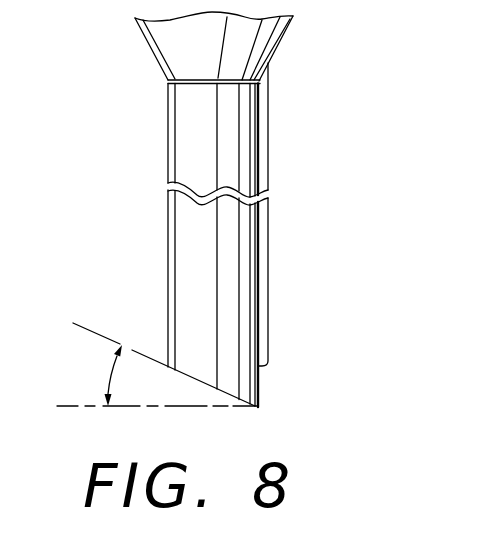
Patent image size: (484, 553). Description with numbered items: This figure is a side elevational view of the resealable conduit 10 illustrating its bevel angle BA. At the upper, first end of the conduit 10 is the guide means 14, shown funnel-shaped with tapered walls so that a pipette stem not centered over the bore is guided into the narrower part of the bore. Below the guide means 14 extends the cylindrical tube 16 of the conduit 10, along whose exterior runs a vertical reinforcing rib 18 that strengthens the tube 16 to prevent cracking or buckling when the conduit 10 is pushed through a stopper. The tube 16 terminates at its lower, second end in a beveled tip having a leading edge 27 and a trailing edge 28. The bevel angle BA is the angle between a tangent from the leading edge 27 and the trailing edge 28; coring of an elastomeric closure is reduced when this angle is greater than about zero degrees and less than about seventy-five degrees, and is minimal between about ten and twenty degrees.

The resealable conduit 10 is at (192, 212).
The guide means 14 is at (143, 35).
The cylindrical tube 16 is at (167, 157).
The reinforcing rib 18 is at (270, 138).
The leading edge 27 is at (267, 407).
The trailing edge 28 is at (163, 364).
The bevel angle BA is at (107, 373).